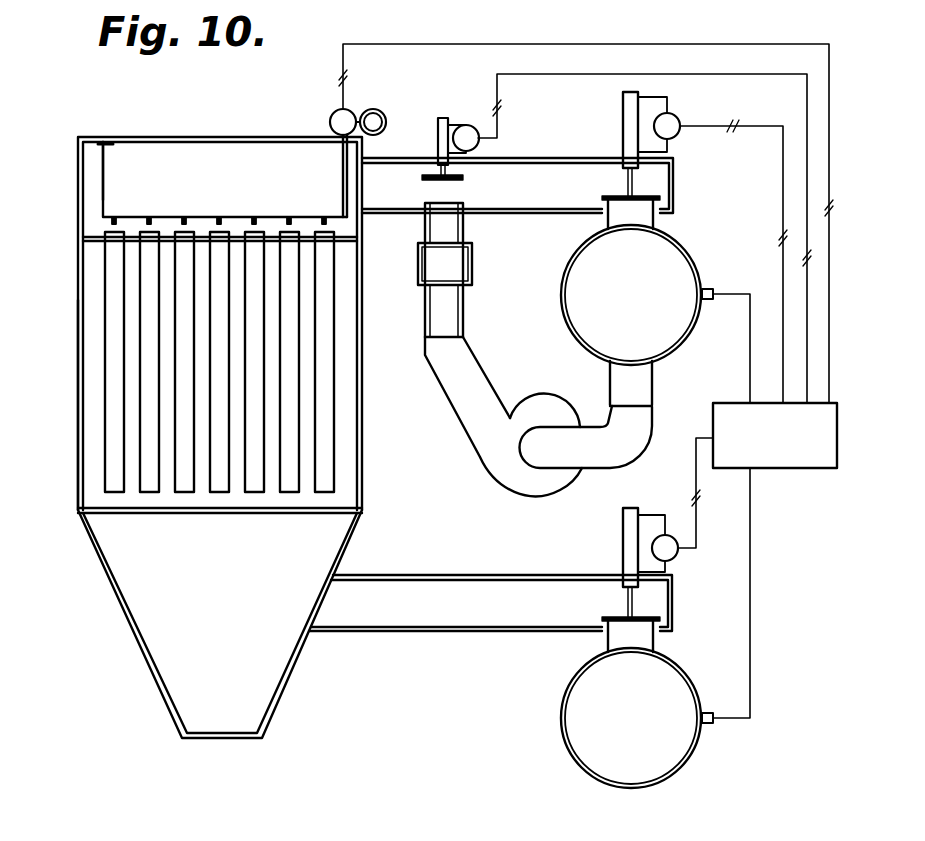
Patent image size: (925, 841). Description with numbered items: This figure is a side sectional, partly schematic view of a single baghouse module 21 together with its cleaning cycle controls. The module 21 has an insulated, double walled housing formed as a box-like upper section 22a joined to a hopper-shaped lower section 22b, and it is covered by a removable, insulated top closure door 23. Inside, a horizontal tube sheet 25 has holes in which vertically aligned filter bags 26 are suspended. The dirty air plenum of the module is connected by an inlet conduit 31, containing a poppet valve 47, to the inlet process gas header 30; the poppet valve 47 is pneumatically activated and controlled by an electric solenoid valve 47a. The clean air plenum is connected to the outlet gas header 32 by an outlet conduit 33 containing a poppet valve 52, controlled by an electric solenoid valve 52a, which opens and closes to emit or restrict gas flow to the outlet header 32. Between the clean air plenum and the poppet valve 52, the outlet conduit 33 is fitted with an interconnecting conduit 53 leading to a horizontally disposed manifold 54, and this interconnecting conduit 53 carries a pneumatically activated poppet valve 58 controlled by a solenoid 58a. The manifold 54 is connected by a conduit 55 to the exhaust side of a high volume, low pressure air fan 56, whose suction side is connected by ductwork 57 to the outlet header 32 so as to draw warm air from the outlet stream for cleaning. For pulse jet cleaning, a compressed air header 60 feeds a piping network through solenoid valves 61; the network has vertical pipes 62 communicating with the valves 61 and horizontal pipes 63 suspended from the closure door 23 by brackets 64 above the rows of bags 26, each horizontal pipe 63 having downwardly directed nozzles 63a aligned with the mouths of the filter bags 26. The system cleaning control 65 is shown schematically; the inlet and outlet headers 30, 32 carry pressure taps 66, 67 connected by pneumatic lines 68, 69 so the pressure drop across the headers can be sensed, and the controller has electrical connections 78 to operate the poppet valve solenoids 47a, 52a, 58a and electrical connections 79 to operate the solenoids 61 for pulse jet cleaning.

The baghouse module 21 is at (93, 116).
The upper section 22a is at (78, 462).
The hopper-shaped lower section 22b is at (133, 626).
The top closure door 23 is at (222, 138).
The tube sheet 25 is at (83, 232).
The filter bags 26 is at (115, 336).
The inlet process gas header 30 is at (562, 718).
The inlet conduit 31 is at (438, 631).
The outlet gas header 32 is at (562, 294).
The outlet conduit 33 is at (548, 212).
The poppet valve 47 is at (623, 528).
The electric solenoid valve 47a is at (680, 555).
The poppet valve 52 is at (623, 124).
The electric solenoid valve 52a is at (678, 115).
The interconnecting conduit 53 is at (425, 226).
The manifold 54 is at (418, 260).
The conduit 55 is at (455, 395).
The air fan 56 is at (546, 405).
The ductwork 57 is at (607, 420).
The poppet valve 58 is at (438, 137).
The solenoid 58a is at (473, 127).
The compressed air header 60 is at (376, 110).
The solenoid valves 61 is at (331, 120).
The vertical pipes 62 is at (343, 178).
The horizontal pipes 63 is at (172, 215).
The nozzles 63a is at (268, 215).
The brackets 64 is at (108, 178).
The system cleaning control 65 is at (718, 403).
The pressure tap 66 is at (710, 724).
The pressure tap 67 is at (709, 289).
The pneumatic line 68 is at (750, 603).
The pneumatic line 69 is at (750, 354).
The electrical connections 78 is at (611, 75).
The electrical connections 79 is at (680, 44).